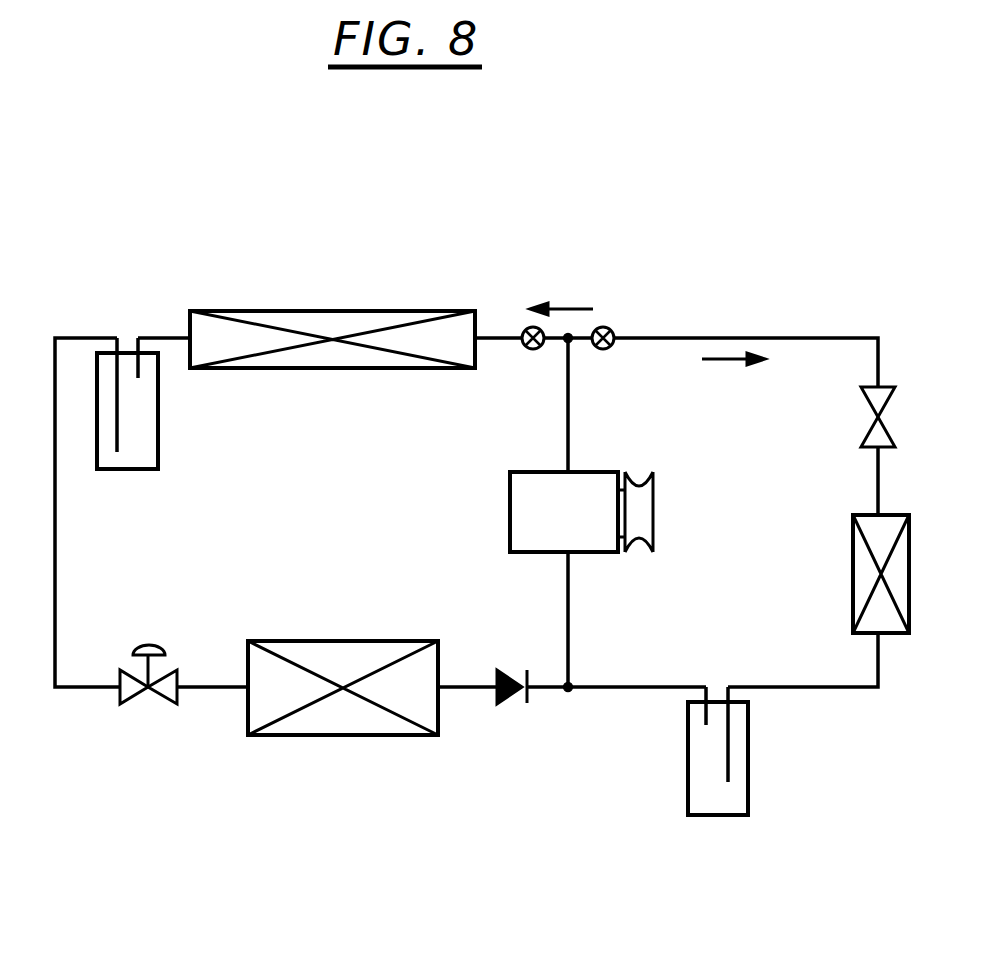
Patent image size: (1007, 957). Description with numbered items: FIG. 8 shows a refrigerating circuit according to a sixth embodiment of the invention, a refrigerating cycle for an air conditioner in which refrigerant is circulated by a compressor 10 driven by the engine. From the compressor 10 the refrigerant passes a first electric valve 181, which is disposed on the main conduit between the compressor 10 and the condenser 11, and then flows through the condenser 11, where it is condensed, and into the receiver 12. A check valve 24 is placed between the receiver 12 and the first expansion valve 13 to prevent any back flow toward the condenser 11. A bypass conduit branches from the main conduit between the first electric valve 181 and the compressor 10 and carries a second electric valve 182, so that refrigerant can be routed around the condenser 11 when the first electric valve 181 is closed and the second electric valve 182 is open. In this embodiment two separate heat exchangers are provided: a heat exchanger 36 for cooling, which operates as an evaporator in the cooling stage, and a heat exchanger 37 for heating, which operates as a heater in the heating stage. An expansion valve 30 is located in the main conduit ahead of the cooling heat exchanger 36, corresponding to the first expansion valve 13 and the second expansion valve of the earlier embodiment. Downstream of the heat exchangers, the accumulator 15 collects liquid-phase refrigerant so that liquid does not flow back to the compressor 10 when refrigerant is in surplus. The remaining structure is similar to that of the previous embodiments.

The compressor 10 is at (597, 545).
The condenser 11 is at (350, 322).
The receiver 12 is at (127, 347).
The first expansion valve 13 is at (868, 408).
The accumulator 15 is at (748, 782).
The check valve 24 is at (512, 698).
The expansion valve 30 is at (130, 702).
The heat exchanger for cooling 36 is at (362, 735).
The heat exchanger for heating 37 is at (858, 553).
The first electric valve 181 is at (533, 350).
The second electric valve 182 is at (607, 350).